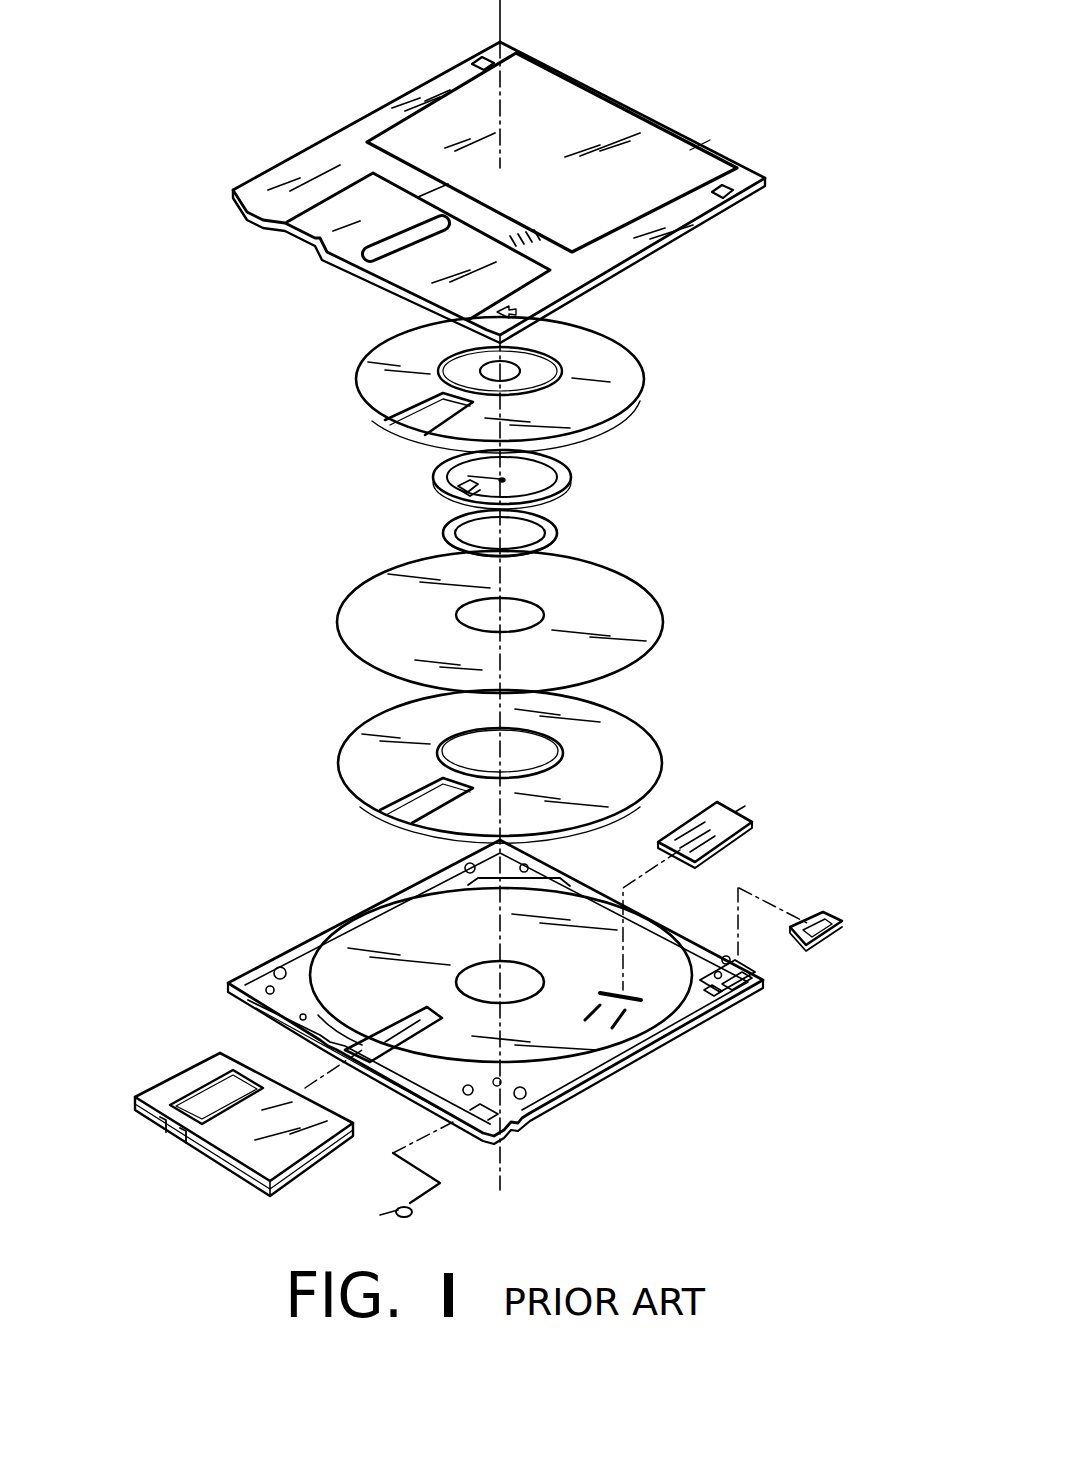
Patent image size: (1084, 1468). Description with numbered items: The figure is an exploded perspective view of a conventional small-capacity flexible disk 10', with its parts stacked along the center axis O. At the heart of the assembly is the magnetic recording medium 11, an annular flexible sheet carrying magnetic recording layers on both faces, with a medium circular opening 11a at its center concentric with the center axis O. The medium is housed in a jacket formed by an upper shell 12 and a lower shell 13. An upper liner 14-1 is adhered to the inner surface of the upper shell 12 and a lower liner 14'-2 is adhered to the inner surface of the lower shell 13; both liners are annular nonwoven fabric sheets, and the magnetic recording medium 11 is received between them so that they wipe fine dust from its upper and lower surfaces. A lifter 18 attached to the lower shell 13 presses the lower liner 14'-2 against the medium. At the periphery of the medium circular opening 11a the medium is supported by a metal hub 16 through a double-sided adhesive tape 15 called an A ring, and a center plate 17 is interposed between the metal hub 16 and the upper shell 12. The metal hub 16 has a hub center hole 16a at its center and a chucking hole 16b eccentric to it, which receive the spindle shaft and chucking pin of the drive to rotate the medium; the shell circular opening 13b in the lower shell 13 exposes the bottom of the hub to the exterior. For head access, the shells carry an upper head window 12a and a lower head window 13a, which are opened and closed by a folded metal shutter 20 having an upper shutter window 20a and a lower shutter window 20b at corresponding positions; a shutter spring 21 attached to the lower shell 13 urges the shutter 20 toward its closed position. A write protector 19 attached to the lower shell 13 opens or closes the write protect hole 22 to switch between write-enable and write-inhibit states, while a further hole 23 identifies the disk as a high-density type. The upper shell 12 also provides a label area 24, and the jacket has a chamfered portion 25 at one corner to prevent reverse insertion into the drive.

The center axis O is at (503, 24).
The flexible disk 10' is at (199, 344).
The magnetic recording medium 11 is at (600, 586).
The medium circular opening 11a is at (488, 618).
The upper shell 12 is at (570, 134).
The upper head window 12a is at (393, 237).
The lower shell 13 is at (568, 1055).
The lower head window 13a is at (405, 1028).
The shell circular opening 13b is at (480, 970).
The upper liner 14-1 is at (612, 390).
The lower liner 14'-2 is at (539, 757).
The double-sided adhesive tape 15 is at (560, 528).
The metal hub 16 is at (570, 470).
The hub center hole 16a is at (462, 482).
The chucking hole 16b is at (452, 490).
The center plate 17 is at (518, 364).
The lifter 18 is at (716, 798).
The write protector 19 is at (806, 947).
The metal shutter 20 is at (218, 1160).
The upper shutter window 20a is at (190, 1092).
The lower shutter window 20b is at (180, 1133).
The shutter spring 21 is at (412, 1212).
The write protect hole 22 is at (730, 200).
The hole 23 is at (469, 62).
The label area 24 is at (684, 157).
The chamfered portion 25 is at (233, 200).